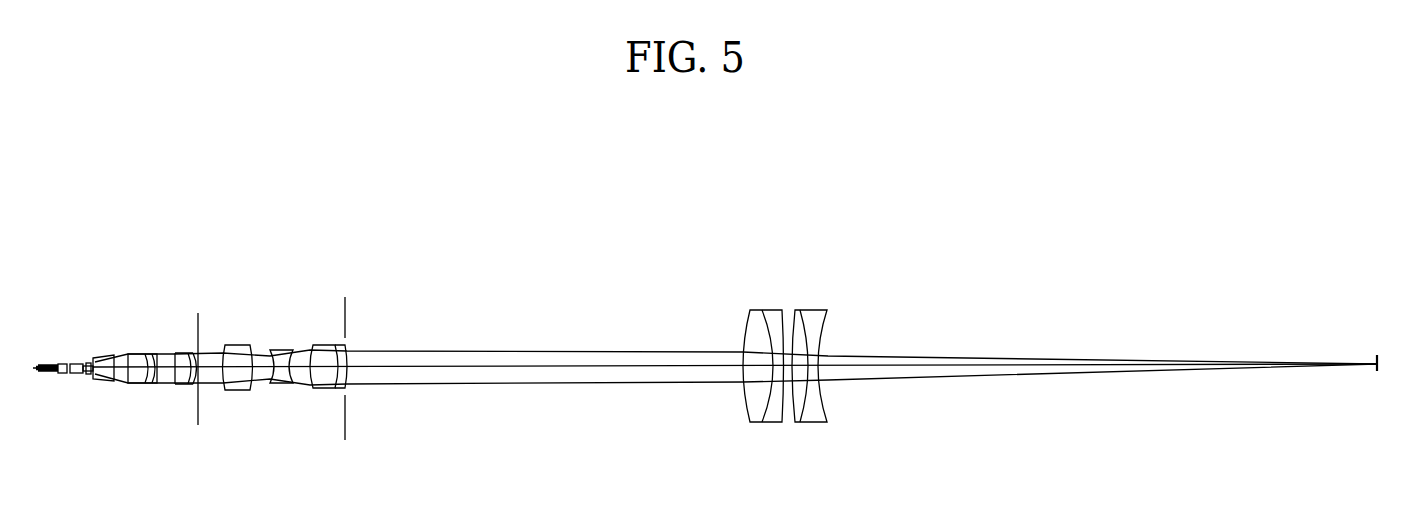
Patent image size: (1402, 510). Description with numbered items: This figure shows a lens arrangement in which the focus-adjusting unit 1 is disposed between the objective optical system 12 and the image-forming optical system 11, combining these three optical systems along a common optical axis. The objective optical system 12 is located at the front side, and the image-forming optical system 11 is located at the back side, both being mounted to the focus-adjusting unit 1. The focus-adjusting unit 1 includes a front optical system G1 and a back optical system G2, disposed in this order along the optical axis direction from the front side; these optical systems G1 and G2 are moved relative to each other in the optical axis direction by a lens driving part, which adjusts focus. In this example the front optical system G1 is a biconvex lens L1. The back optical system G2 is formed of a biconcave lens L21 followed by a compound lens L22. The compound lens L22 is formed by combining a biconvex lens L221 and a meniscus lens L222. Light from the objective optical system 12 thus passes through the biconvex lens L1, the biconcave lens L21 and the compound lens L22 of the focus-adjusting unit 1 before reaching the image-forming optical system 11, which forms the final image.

The focus-adjusting unit 1 is at (265, 326).
The image-forming optical system 11 is at (866, 290).
The objective optical system 12 is at (109, 320).
The front optical system G1 is at (225, 383).
The back optical system G2 is at (332, 320).
The biconvex lens L1 is at (236, 345).
The biconcave lens L21 is at (283, 350).
The compound lens L22 is at (334, 284).
The biconvex lens L221 is at (318, 345).
The meniscus lens L222 is at (340, 345).